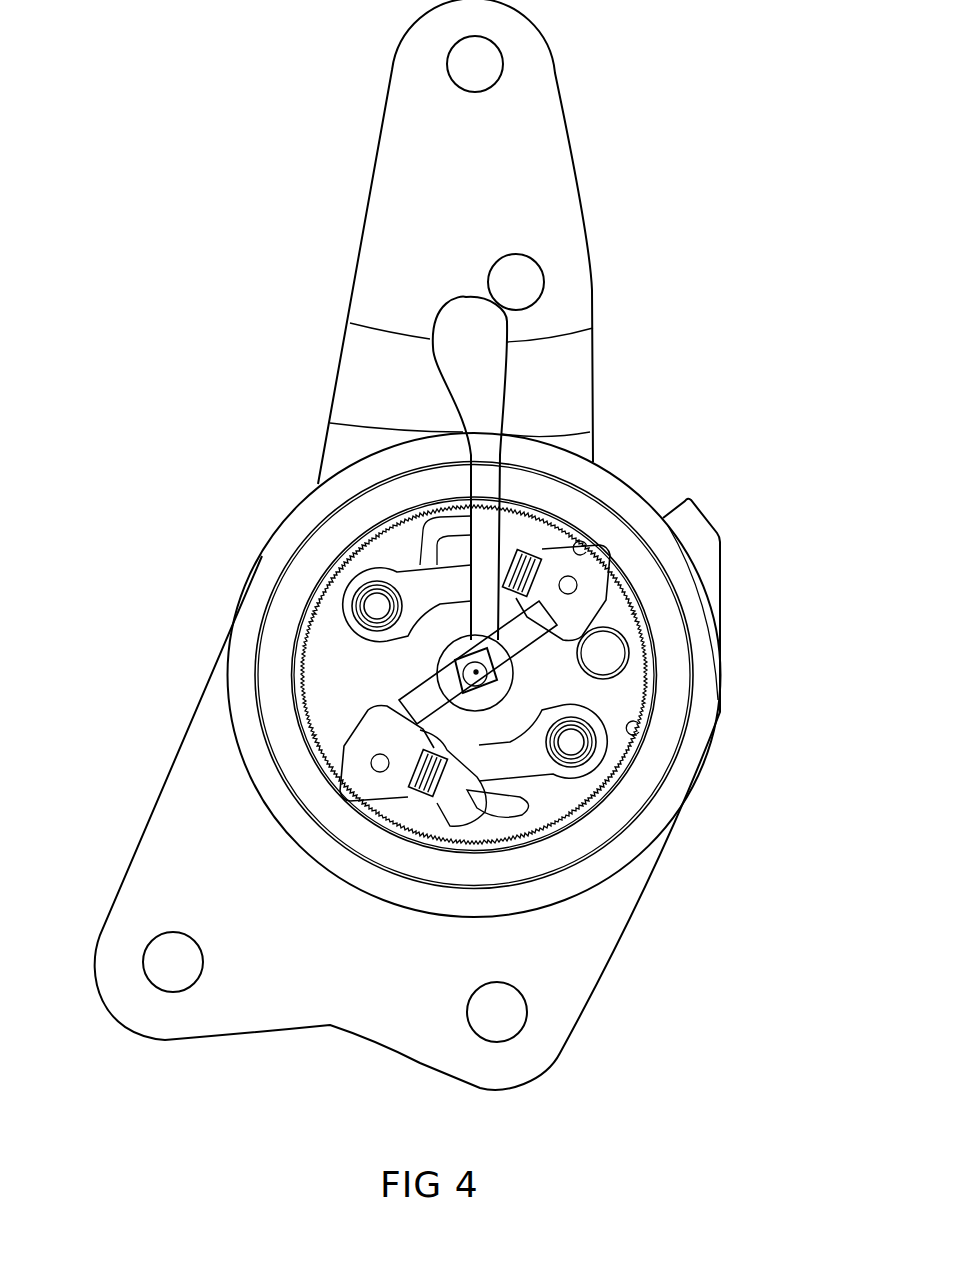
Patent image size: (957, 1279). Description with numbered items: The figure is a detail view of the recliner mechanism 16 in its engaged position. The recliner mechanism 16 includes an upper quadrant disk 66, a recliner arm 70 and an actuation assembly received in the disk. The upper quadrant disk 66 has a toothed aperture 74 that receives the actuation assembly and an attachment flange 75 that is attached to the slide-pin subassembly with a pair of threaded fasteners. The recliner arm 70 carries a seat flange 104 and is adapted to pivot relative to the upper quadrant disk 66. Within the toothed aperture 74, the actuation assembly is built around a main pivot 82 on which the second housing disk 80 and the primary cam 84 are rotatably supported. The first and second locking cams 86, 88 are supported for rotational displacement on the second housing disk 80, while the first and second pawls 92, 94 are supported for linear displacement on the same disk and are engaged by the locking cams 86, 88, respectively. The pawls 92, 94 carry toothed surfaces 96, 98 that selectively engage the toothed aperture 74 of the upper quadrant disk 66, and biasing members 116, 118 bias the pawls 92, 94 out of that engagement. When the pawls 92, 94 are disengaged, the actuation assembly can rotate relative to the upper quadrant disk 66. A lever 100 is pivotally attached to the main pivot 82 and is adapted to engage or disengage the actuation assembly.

The recliner mechanism 16 is at (284, 519).
The upper quadrant disk 66 is at (645, 893).
The recliner arm 70 is at (540, 183).
The toothed aperture 74 is at (630, 733).
The attachment flange 75 is at (155, 863).
The second housing disk 80 is at (344, 716).
The main pivot 82 is at (453, 662).
The primary cam 84 is at (407, 703).
The first locking cam 86 is at (407, 574).
The second locking cam 88 is at (537, 773).
The first pawl 92 is at (523, 561).
The second pawl 94 is at (467, 815).
The toothed surface 96 is at (383, 799).
The toothed surface 98 is at (580, 555).
The lever 100 is at (452, 327).
The seat flange 104 is at (534, 96).
The biasing member 116 is at (402, 788).
The biasing member 118 is at (532, 547).